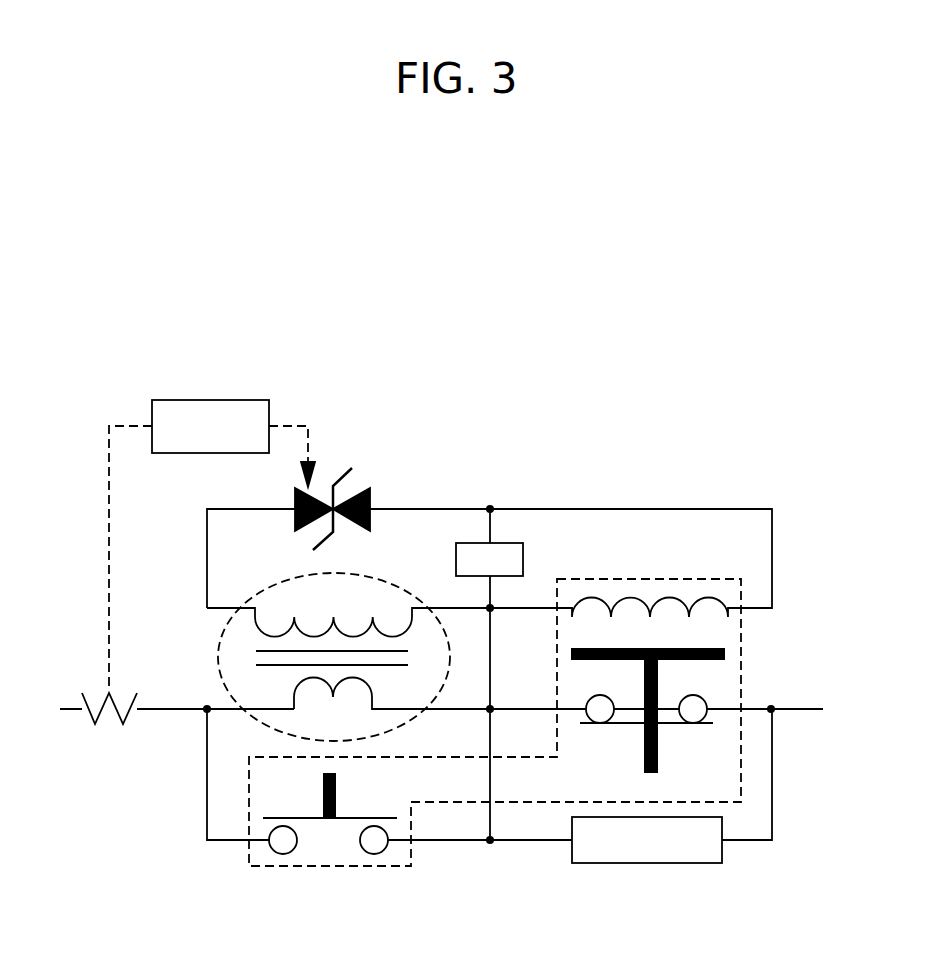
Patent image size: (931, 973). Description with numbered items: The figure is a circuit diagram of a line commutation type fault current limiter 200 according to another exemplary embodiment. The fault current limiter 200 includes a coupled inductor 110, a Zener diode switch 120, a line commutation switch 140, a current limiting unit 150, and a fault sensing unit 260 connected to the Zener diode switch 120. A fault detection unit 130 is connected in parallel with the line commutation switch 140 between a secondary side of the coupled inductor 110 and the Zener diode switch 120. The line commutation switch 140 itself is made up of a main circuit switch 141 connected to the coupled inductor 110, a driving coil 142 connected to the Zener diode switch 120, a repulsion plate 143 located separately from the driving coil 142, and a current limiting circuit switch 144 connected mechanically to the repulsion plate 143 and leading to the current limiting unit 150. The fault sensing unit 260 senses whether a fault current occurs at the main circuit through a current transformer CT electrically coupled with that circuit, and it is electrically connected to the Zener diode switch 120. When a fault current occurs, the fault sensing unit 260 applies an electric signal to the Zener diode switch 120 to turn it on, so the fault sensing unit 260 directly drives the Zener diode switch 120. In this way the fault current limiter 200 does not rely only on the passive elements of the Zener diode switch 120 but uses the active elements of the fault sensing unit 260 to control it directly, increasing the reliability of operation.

The line commutation type fault current limiter 200 is at (178, 305).
The fault sensing unit 260 is at (215, 400).
The Zener diode switch 120 is at (389, 466).
The fault detection unit 130 is at (523, 545).
The coupled inductor 110 is at (240, 606).
The line commutation switch 140 is at (668, 579).
The driving coil 142 is at (631, 601).
The repulsion plate 143 is at (725, 660).
The main circuit switch 141 is at (648, 725).
The current limiting circuit switch 144 is at (330, 836).
The current limiting unit 150 is at (673, 863).